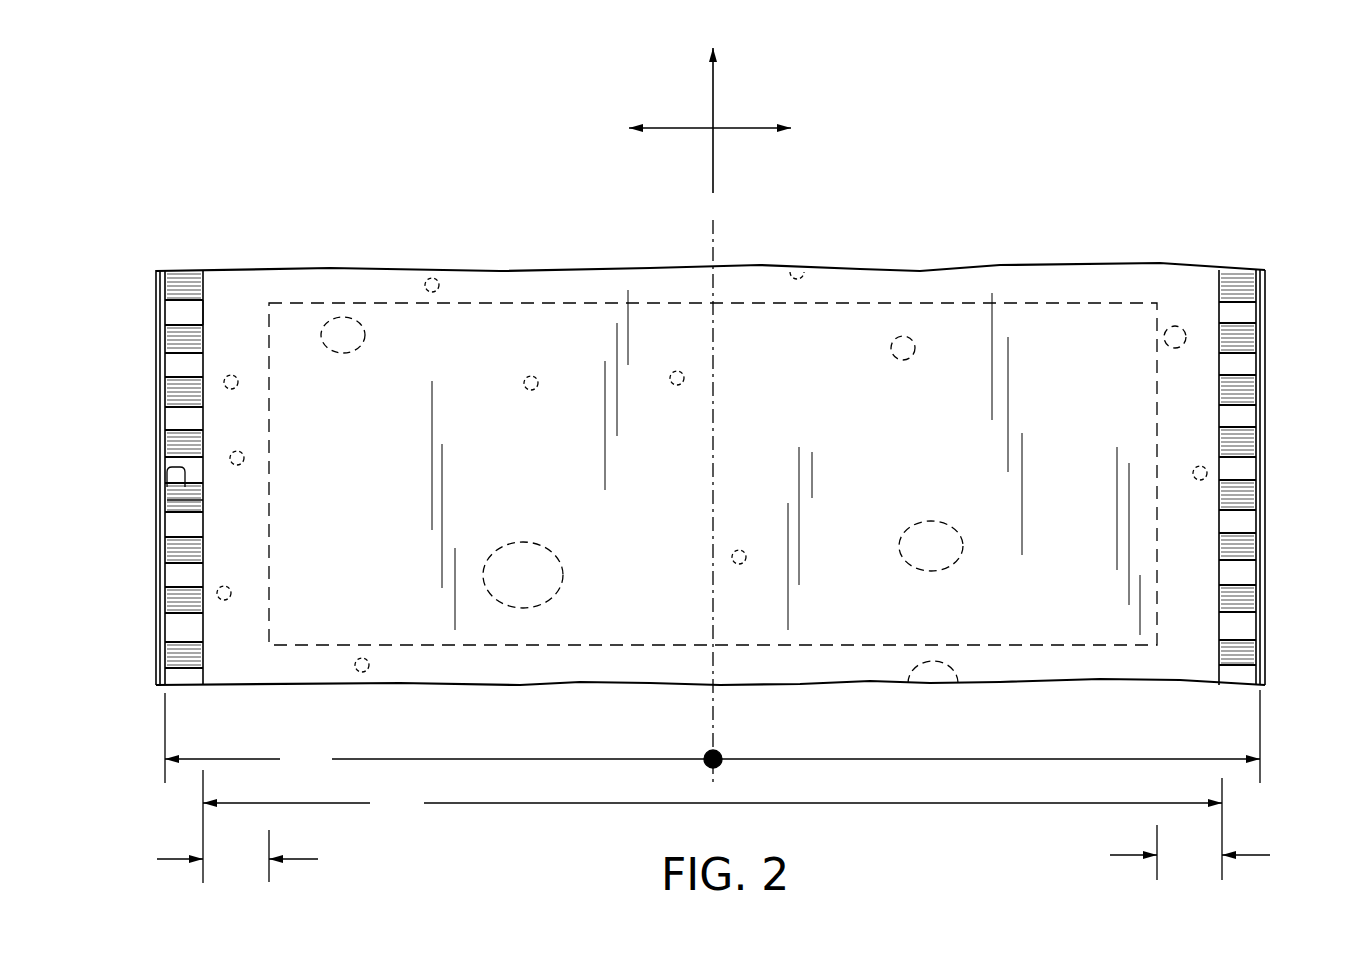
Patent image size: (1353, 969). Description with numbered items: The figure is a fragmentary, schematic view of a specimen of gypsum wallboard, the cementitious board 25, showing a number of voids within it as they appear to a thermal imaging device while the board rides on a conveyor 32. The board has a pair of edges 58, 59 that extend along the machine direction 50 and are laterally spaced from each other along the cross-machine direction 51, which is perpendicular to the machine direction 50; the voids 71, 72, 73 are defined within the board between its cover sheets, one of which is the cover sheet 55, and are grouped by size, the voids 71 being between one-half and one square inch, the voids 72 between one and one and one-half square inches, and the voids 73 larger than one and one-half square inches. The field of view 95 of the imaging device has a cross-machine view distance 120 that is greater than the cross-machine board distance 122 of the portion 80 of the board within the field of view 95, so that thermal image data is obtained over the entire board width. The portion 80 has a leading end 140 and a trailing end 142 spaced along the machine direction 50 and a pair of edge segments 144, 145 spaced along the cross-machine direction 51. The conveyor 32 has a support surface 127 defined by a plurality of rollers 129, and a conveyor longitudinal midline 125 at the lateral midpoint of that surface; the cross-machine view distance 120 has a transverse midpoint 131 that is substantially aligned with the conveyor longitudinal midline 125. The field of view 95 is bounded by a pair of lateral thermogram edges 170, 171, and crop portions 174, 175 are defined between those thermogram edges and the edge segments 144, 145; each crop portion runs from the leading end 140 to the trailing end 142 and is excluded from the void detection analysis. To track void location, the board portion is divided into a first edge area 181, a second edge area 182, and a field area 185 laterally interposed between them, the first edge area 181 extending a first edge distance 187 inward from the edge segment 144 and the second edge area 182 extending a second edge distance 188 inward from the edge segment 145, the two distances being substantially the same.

The cementitious board 25 is at (497, 292).
The conveyor 32 is at (155, 480).
The machine direction 50 is at (713, 90).
The cross-machine direction 51 is at (688, 128).
The cover sheet 55 is at (520, 478).
The edge 58 is at (147, 450).
The edge 59 is at (1265, 440).
The void 71 is at (533, 376).
The void 72 is at (342, 317).
The void 73 is at (528, 608).
The portion of the cementitious board 80 is at (1080, 342).
The field of view 95 is at (1027, 303).
The cross-machine view distance 120 is at (712, 736).
The cross-machine board distance 122 is at (712, 826).
The conveyor longitudinal midline 125 is at (713, 497).
The support surface 127 is at (182, 390).
The rollers 129 is at (190, 503).
The transverse midpoint 131 is at (708, 752).
The leading end 140 is at (835, 303).
The trailing end 142 is at (863, 645).
The edge segment 144 is at (200, 388).
The edge segment 145 is at (1219, 400).
The lateral thermogram edge 170 is at (186, 493).
The lateral thermogram edge 171 is at (1252, 447).
The crop portion 174 is at (187, 518).
The crop portion 175 is at (1236, 544).
The first edge area 181 is at (250, 515).
The second edge area 182 is at (1201, 515).
The field area 185 is at (372, 515).
The first edge distance 187 is at (237, 856).
The second edge distance 188 is at (1190, 852).